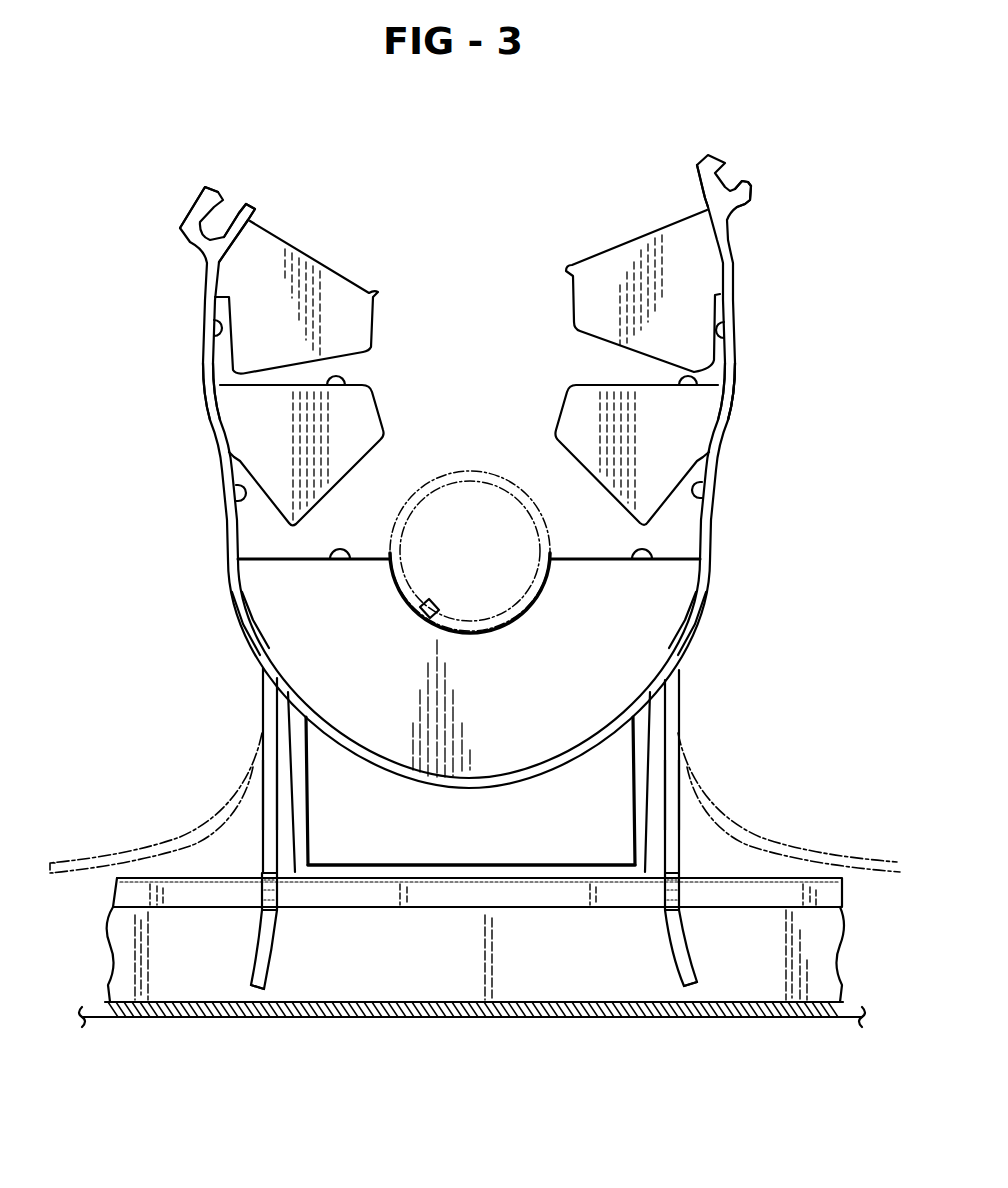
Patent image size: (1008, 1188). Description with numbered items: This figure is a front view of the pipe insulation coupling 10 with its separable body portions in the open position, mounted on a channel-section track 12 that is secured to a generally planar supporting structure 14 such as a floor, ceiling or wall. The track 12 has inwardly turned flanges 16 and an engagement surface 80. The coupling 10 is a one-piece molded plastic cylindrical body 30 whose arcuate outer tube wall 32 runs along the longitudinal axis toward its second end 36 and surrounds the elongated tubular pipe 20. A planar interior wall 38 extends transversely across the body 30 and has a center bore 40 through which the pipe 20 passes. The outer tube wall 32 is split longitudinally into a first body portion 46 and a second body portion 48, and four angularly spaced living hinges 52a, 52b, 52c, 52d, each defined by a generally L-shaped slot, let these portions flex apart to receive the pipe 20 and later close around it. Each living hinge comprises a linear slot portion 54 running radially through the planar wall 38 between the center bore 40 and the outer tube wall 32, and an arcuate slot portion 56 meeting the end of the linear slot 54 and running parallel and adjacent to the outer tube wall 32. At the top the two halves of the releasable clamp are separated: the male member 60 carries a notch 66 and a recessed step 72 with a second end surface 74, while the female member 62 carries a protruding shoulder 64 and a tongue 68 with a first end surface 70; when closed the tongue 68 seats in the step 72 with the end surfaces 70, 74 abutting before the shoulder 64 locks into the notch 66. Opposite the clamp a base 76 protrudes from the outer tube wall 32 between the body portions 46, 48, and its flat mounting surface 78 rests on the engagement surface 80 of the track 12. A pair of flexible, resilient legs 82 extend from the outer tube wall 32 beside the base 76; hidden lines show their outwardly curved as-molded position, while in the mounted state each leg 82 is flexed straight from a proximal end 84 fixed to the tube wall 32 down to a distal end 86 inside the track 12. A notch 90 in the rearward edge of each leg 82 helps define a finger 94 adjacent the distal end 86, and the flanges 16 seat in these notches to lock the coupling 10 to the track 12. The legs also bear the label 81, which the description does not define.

The pipe insulation coupling 10 is at (800, 329).
The channel-section track 12 is at (812, 935).
The supporting structure 14 is at (846, 1018).
The flanges 16 is at (832, 892).
The pipe 20 is at (465, 470).
The cylindrical body 30 is at (468, 459).
The outer tube wall 32 is at (705, 625).
The second end 36 is at (250, 648).
The planar interior wall 38 is at (533, 721).
The center bore 40 is at (430, 608).
The first body portion 46 is at (722, 428).
The second body portion 48 is at (212, 420).
The living hinge 52a is at (681, 506).
The living hinge 52b is at (721, 352).
The living hinge 52c is at (228, 363).
The living hinge 52d is at (242, 519).
The linear slot portion 54 is at (336, 390).
The arcuate slot portion 56 is at (213, 328).
The male member 60 is at (696, 215).
The female member 62 is at (221, 220).
The shoulder 64 is at (222, 200).
The notch 66 is at (733, 187).
The tongue 68 is at (243, 224).
The first end surface 70 is at (250, 207).
The recessed step 72 is at (703, 192).
The second end surface 74 is at (707, 202).
The base 76 is at (303, 833).
The flat mounting surface 78 is at (436, 882).
The engagement surface 80 is at (158, 877).
The leg 81 is at (272, 813).
The legs 82 is at (213, 807).
The proximal end 84 is at (471, 770).
The distal end 86 is at (252, 988).
The notch 90 is at (265, 890).
The finger 94 is at (268, 947).